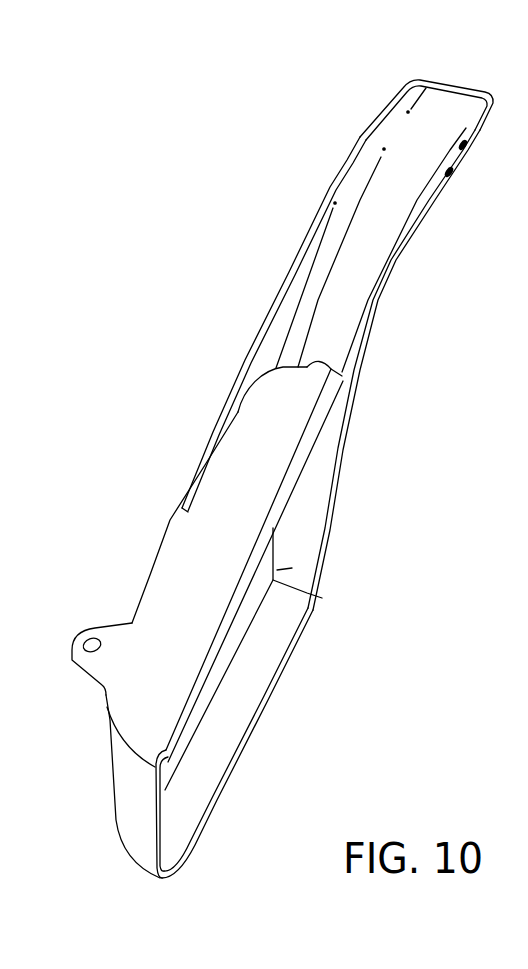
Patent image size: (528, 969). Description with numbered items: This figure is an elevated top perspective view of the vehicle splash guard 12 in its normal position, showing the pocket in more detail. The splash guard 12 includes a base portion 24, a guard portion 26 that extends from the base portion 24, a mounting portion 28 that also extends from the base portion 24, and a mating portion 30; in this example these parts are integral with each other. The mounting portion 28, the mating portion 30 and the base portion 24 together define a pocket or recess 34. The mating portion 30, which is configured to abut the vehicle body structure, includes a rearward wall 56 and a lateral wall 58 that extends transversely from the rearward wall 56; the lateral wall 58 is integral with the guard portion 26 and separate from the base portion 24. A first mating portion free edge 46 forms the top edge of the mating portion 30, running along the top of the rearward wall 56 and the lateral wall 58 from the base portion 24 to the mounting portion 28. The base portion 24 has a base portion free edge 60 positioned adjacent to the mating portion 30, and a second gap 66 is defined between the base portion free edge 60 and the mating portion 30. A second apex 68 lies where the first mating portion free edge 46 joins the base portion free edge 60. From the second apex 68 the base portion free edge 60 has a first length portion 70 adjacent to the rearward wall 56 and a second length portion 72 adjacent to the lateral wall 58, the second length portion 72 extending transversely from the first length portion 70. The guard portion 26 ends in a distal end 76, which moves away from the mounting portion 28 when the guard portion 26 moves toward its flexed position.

The vehicle splash guard 12 is at (170, 182).
The base portion 24 is at (138, 592).
The guard portion 26 is at (131, 796).
The mounting portion 28 is at (363, 366).
The mating portion 30 is at (330, 202).
The pocket or recess 34 is at (345, 300).
The first mating portion free edge 46 is at (363, 137).
The rearward wall 56 is at (292, 300).
The lateral wall 58 is at (447, 108).
The base portion free edge 60 is at (212, 467).
The second gap 66 is at (263, 360).
The second apex 68 is at (181, 503).
The first length portion 70 is at (243, 410).
The second length portion 72 is at (332, 370).
The distal end 76 is at (195, 843).